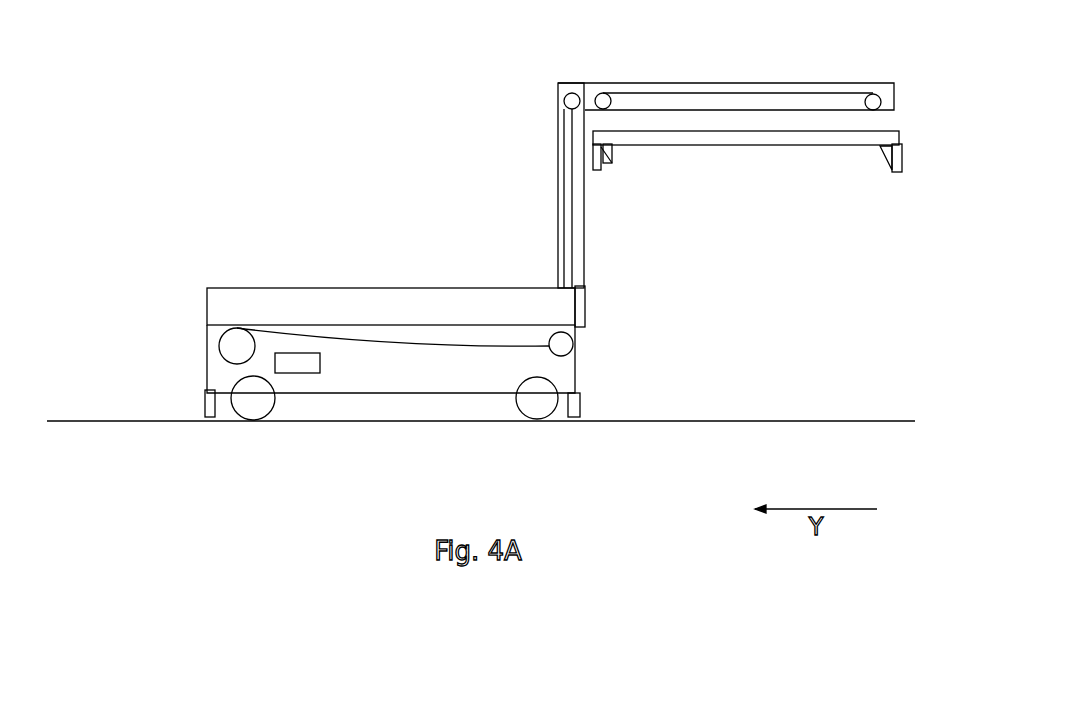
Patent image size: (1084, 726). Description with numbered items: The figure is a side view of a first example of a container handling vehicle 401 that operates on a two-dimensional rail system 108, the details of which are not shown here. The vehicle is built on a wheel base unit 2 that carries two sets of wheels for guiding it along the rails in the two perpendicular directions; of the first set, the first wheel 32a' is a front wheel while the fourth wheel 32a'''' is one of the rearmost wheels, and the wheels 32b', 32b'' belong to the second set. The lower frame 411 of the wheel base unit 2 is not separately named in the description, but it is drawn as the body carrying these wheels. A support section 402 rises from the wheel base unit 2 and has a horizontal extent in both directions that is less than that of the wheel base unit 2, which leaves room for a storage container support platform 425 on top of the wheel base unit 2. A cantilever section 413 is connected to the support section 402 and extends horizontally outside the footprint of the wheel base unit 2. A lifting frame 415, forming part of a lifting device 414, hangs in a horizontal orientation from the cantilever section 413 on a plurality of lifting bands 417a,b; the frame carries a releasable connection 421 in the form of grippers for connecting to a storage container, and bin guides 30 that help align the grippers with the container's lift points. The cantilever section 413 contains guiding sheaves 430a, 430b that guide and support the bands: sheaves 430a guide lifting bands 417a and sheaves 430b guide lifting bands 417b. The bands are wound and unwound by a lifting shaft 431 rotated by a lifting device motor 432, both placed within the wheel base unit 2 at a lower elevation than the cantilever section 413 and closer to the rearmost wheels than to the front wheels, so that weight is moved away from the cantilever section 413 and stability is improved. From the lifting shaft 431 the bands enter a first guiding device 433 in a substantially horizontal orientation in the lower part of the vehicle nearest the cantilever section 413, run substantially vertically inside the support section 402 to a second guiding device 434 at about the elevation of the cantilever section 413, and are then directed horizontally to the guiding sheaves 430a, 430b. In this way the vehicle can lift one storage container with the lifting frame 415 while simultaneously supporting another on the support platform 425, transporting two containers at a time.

The wheel base unit 2 is at (558, 372).
The bin guides 30 is at (598, 168).
The first wheel 32a' is at (632, 434).
The fourth wheel 32a'''' is at (165, 434).
The wheel of the second set of wheels 32b' is at (249, 440).
The wheel of the second set of wheels 32b'' is at (502, 434).
The rail system 108 is at (73, 421).
The container handling vehicle 401 is at (337, 157).
The support section 402 is at (558, 223).
The lower frame 411 is at (207, 304).
The cantilever section 413 is at (760, 83).
The lifting device 414 is at (723, 195).
The lifting frame 415 is at (793, 145).
The lifting bands 417a is at (883, 125).
The lifting bands 417b is at (612, 132).
The plurality of lifting bands 417a,b is at (445, 302).
The releasable connection 421 is at (612, 150).
The storage container support platform 425 is at (333, 290).
The guiding sheaves 430a is at (871, 94).
The guiding sheaves 430b is at (603, 93).
The lifting shaft 431 is at (230, 352).
The lifting device motor 432 is at (300, 353).
The first guiding device 433 is at (562, 343).
The second guiding device 434 is at (565, 98).